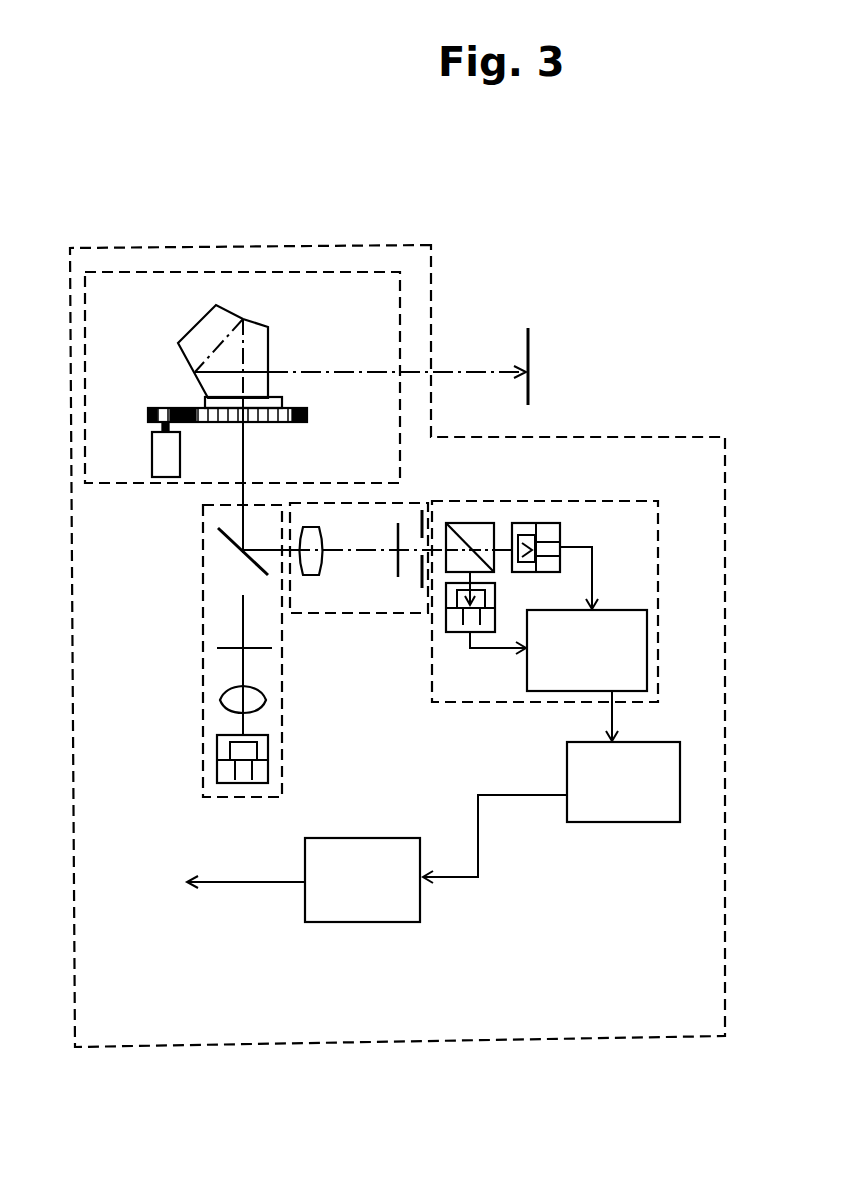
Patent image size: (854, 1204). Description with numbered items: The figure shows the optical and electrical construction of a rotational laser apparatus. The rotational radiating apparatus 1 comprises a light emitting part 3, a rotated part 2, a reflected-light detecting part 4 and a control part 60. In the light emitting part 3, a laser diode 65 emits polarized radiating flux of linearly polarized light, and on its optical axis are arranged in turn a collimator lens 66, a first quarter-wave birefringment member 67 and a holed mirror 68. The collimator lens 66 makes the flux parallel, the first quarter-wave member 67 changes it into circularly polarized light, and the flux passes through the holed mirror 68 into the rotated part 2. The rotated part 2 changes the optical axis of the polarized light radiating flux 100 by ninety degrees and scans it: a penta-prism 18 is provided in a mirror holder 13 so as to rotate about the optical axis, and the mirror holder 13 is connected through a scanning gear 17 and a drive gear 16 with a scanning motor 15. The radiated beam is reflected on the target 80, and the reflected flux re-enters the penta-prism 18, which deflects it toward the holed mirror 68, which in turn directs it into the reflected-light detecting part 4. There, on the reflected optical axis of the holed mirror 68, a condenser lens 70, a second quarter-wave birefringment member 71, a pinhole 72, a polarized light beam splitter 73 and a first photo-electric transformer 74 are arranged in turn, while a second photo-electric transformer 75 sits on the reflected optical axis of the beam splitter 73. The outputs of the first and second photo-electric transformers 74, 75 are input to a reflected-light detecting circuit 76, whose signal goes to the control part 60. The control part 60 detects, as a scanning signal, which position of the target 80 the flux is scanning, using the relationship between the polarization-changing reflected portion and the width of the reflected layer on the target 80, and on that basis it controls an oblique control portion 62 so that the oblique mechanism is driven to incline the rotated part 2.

The rotational radiating apparatus 1 is at (440, 272).
The rotated part 2 is at (262, 271).
The light emitting part 3 is at (202, 705).
The reflected-light detecting part 4 is at (573, 499).
The mirror holder 13 is at (207, 398).
The scanning motor 15 is at (158, 452).
The drive gear 16 is at (165, 410).
The scanning gear 17 is at (307, 411).
The penta-prism 18 is at (205, 318).
The control part 60 is at (567, 760).
The oblique control portion 62 is at (353, 922).
The laser diode 65 is at (217, 768).
The collimator lens 66 is at (268, 697).
The first λ/4 birefringment member 67 is at (222, 646).
The holed mirror 68 is at (223, 535).
The condenser lens 70 is at (322, 536).
The second λ/4 birefringment member 71 is at (400, 568).
The pinhole 72 is at (428, 520).
The polarized light beam splitter 73 is at (482, 523).
The first photo-electric transformer 74 is at (560, 530).
The second photo-electric transformer 75 is at (445, 623).
The reflected-light detecting circuit 76 is at (622, 609).
The target 80 is at (533, 345).
The polarized light radiating flux 100 is at (500, 367).